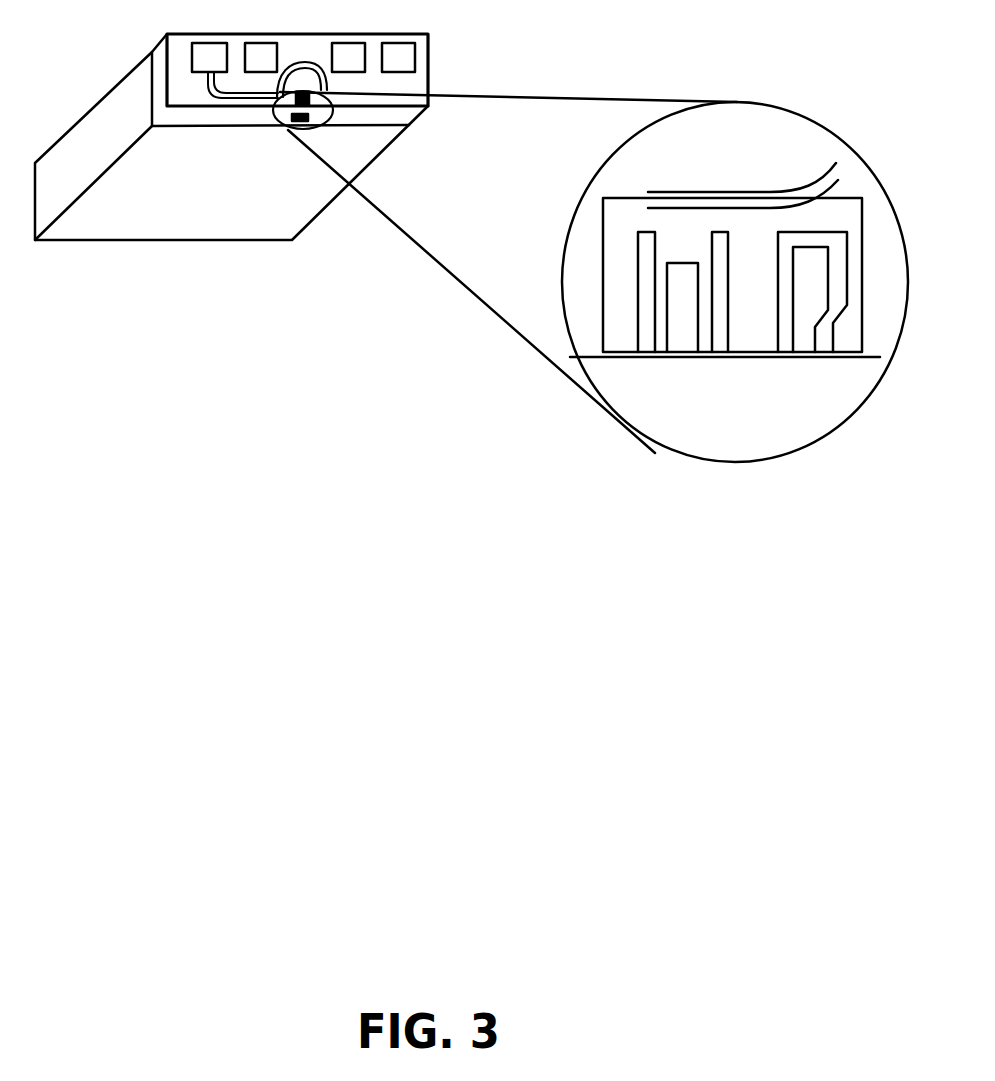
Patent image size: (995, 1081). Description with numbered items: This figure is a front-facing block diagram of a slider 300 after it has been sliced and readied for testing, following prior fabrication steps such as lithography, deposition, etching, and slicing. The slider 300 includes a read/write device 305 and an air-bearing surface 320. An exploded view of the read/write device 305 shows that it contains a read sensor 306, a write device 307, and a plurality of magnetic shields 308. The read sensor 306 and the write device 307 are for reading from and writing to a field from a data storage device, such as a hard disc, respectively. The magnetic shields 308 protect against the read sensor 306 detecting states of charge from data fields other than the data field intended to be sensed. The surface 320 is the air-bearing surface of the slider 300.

The slider 300 is at (473, 231).
The read/write device 305 is at (607, 257).
The read sensor 306 is at (683, 330).
The write device 307 is at (835, 241).
The magnetic shields 308 is at (645, 312).
The air-bearing surface 320 is at (255, 203).